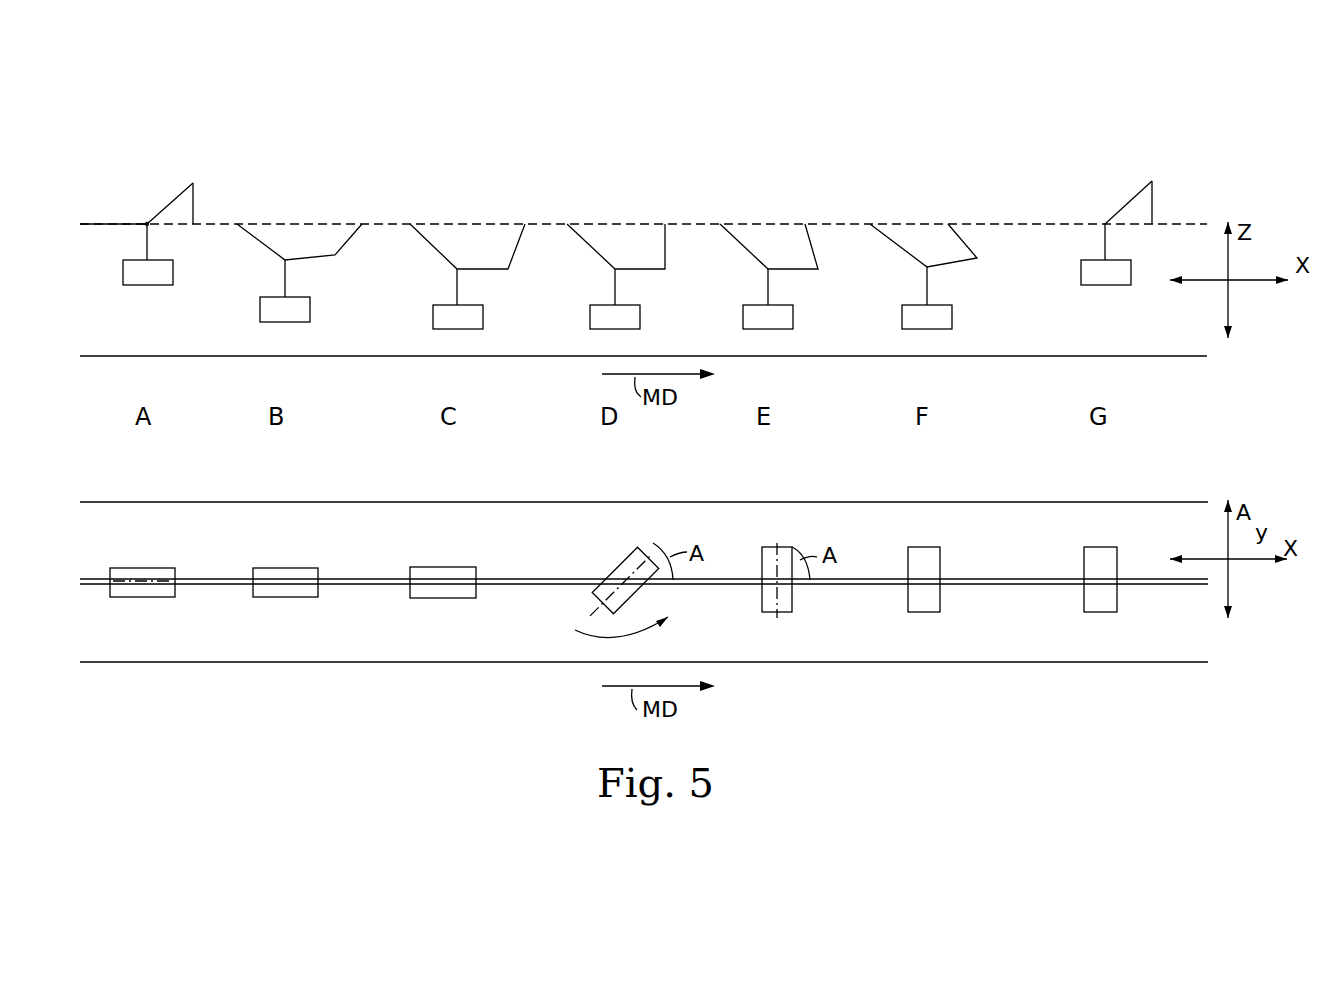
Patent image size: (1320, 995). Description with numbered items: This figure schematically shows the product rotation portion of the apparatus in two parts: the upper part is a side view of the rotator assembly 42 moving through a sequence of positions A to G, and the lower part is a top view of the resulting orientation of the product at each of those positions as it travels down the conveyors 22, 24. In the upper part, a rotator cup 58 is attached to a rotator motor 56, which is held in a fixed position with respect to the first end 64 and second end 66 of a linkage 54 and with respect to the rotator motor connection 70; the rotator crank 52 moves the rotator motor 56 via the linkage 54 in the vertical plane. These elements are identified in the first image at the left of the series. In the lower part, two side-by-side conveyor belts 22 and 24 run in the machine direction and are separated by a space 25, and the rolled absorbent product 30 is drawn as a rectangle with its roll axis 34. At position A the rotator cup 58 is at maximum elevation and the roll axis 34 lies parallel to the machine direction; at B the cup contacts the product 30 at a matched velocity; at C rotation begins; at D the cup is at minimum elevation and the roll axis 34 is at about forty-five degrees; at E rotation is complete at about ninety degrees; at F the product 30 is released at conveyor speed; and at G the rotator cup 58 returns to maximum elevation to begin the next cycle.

The first conveyor belt 22 is at (130, 355).
The second conveyor belt 24 is at (152, 648).
The space 25 is at (97, 580).
The rolled absorbent product 30 is at (128, 568).
The roll axis 34 is at (168, 582).
The rotator assembly 42 is at (170, 148).
The rotator crank 52 is at (197, 224).
The linkage 54 is at (167, 206).
The rotator motor 56 is at (150, 250).
The rotator cup 58 is at (127, 268).
The first end 64 is at (193, 183).
The second end 66 is at (93, 223).
The rotator motor connection 70 is at (143, 222).